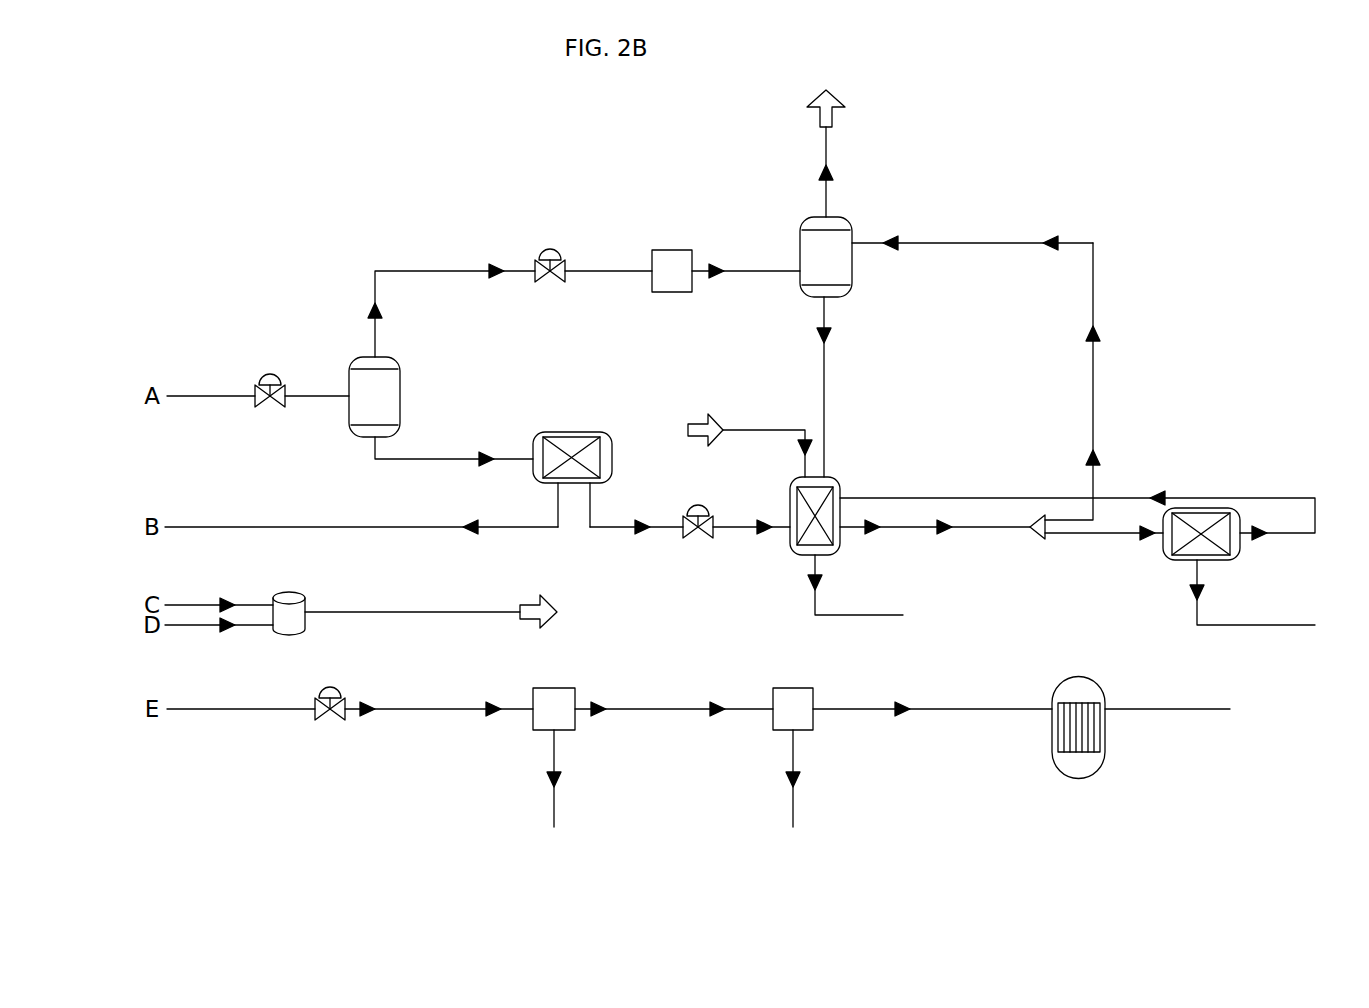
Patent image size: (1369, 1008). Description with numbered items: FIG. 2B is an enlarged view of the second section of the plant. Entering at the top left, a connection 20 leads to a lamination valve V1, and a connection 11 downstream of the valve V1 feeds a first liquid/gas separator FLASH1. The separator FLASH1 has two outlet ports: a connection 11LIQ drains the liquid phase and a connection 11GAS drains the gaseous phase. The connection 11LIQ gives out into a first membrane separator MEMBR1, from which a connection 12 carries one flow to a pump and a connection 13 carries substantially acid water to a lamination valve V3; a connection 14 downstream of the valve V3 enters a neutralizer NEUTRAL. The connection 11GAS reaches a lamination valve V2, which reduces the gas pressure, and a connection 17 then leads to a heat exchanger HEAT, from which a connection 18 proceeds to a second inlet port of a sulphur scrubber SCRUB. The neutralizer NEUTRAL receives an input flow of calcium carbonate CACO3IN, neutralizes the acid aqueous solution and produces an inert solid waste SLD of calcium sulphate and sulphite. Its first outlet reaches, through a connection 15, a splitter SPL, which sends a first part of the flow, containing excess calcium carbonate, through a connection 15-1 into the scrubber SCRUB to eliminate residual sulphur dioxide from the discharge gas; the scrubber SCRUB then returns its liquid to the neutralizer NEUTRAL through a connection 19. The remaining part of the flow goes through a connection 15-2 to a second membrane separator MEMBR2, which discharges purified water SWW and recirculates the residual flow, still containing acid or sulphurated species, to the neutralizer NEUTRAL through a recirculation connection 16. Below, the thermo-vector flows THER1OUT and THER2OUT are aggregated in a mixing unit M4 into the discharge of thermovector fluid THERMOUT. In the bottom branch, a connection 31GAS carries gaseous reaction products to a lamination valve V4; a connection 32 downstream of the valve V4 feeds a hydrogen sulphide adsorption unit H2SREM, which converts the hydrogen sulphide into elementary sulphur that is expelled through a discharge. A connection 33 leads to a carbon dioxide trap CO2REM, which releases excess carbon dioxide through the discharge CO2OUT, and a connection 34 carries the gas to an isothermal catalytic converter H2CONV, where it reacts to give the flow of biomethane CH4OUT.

The raw feed line A 20 is at (222, 396).
The connection 11 is at (313, 396).
The connection 11GAS is at (410, 271).
The connection 11LIQ is at (415, 459).
The connection 17 is at (610, 271).
The connection 18 is at (782, 271).
The connection 19 is at (826, 378).
The connection 12 is at (222, 527).
The connection 13 is at (612, 530).
The connection 14 is at (740, 531).
The connection 15 is at (905, 528).
The connection 15-1 is at (1093, 378).
The connection 15-2 is at (1127, 535).
The recirculation connection 16 is at (1018, 498).
The connection 31GAS is at (235, 709).
The connection 32 is at (455, 710).
The connection 33 is at (640, 709).
The connection 34 is at (960, 709).
The lamination valve V1 is at (262, 400).
The lamination valve V2 is at (550, 249).
The lamination valve V3 is at (697, 536).
The lamination valve V4 is at (325, 715).
The first liquid/gas separator FLASH1 is at (378, 383).
The heat exchanger HEAT is at (672, 265).
The sulphur scrubber SCRUB is at (840, 282).
The input flow of calcium carbonate CACO3IN is at (773, 430).
The first membrane separator MEMBR1 is at (543, 435).
The second membrane separator MEMBR2 is at (1225, 548).
The neutralizer NEUTRAL is at (830, 490).
The inert solid waste SLD is at (850, 615).
The splitter SPL is at (1033, 537).
The output flow of purified water SWW is at (1245, 627).
The thermo-vector fluid flow THER1OUT is at (192, 605).
The thermo-vector fluid flow THER2OUT is at (192, 625).
The mixing unit M4 is at (290, 597).
The discharge of thermovector fluid THERMOUT is at (365, 612).
The unit for adsorption of hydrogen sulphide H2SREM is at (555, 705).
The carbon-dioxide trap CO2REM is at (785, 700).
The output flow of carbon dioxide CO2OUT is at (795, 795).
The isothermal catalytic converter H2CONV is at (1078, 765).
The output flow of biomethane CH4OUT is at (1170, 710).